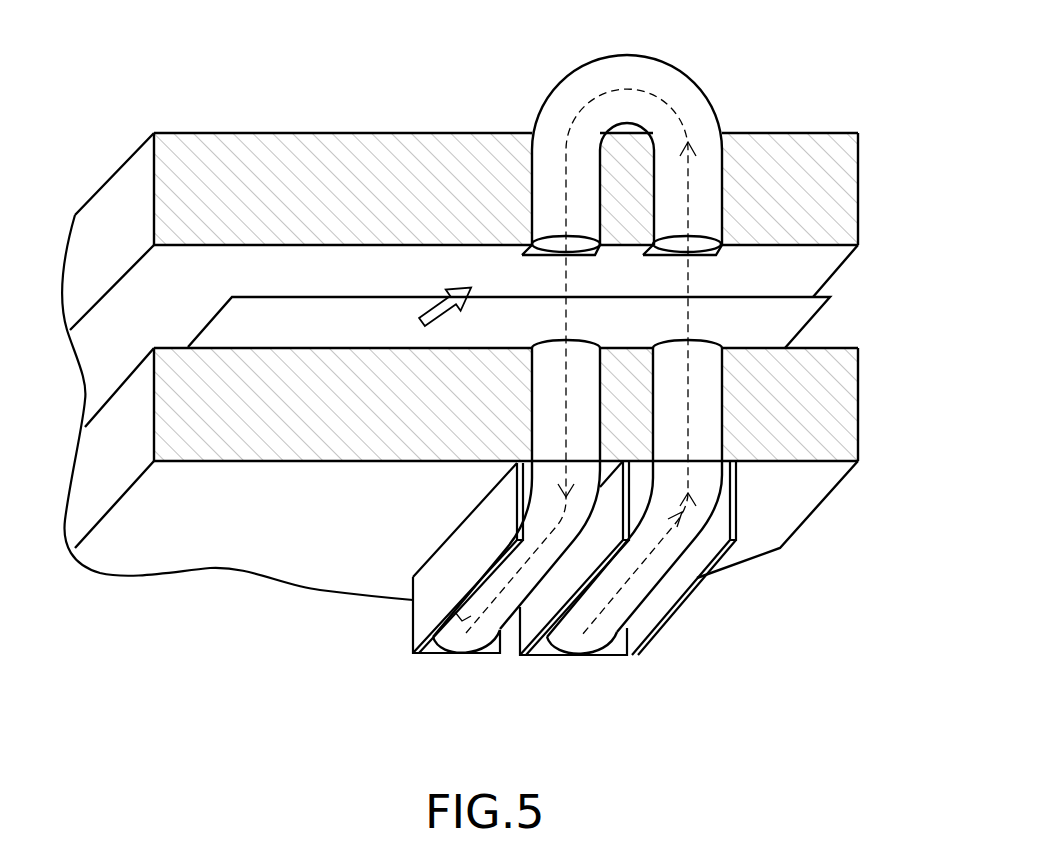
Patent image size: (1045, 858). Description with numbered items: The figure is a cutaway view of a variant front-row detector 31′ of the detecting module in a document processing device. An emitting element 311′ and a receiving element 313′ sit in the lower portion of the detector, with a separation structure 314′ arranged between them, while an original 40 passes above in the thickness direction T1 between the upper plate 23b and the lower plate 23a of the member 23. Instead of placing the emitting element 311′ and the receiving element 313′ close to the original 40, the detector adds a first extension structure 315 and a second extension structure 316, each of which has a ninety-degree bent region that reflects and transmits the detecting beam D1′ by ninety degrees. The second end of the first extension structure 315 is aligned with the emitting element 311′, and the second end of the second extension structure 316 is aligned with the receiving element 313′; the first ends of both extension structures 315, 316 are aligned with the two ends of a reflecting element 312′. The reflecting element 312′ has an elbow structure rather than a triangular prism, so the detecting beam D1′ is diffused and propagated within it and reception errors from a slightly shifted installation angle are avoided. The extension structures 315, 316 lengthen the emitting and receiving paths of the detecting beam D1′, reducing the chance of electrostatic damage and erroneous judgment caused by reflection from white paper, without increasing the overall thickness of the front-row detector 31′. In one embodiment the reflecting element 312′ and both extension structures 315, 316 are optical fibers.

The front-row detector 31′ is at (539, 325).
The reflecting element 312′ is at (679, 82).
The upper plate of heat conducting member 23b is at (260, 145).
The lower plate of heat conducting member 23a is at (843, 410).
The heat conducting member 23 is at (95, 362).
The original 40 is at (330, 300).
The thickness direction T1 is at (453, 314).
The detecting beam D1′ is at (687, 305).
The receiving element 313′ is at (433, 650).
The separation structure 314′ is at (540, 610).
The first extension structure 315 is at (643, 575).
The second extension structure 316 is at (480, 632).
The emitting element 311′ is at (632, 652).